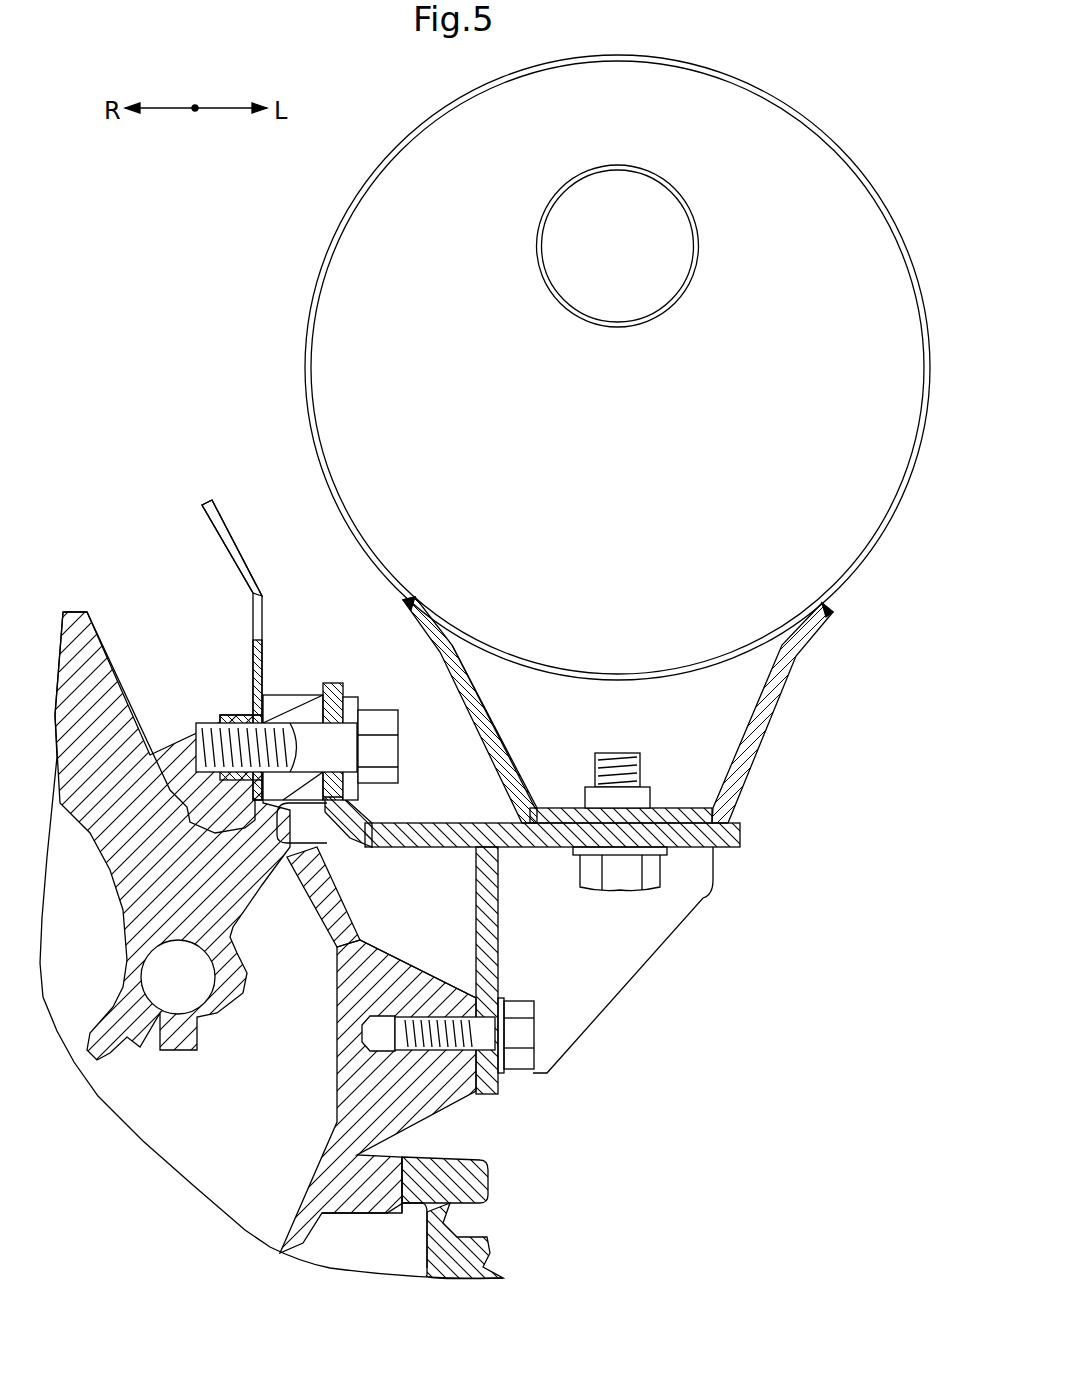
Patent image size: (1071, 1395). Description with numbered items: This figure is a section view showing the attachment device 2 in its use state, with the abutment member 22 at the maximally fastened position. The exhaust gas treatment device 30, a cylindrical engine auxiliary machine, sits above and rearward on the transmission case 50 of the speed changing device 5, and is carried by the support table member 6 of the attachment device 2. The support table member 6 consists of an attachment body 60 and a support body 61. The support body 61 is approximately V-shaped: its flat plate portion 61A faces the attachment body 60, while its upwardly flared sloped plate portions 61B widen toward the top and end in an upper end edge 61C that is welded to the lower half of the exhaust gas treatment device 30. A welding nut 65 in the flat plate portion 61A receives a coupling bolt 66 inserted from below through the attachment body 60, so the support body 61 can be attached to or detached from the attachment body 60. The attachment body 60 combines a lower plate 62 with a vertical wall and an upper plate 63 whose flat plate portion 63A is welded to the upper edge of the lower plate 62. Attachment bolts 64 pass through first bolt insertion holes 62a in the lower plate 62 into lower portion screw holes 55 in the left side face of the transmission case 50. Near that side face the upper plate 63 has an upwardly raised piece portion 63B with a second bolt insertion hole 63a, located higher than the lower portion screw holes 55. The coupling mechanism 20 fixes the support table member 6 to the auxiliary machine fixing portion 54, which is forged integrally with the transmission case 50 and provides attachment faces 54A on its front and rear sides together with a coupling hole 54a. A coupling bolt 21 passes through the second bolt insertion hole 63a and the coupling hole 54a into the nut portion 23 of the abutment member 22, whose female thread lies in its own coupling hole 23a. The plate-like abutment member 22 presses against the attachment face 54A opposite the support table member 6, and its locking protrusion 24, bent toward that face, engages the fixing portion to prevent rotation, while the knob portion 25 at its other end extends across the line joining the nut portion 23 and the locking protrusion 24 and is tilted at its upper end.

The attachment device 2 is at (367, 614).
The speed changing device 5 is at (271, 982).
The support table member 6 is at (508, 827).
The coupling mechanism 20 is at (376, 654).
The coupling bolt 21 is at (490, 738).
The abutment member 22 is at (248, 653).
The nut portion 23 is at (222, 778).
The coupling hole 23a is at (213, 733).
The locking protrusion 24 is at (378, 710).
The knob portion 25 is at (213, 527).
The exhaust gas treatment device 30 is at (760, 86).
The transmission case 50 is at (283, 1252).
The auxiliary machine fixing portion 54 is at (293, 700).
The attachment face 54A is at (253, 715).
The coupling hole 54a is at (310, 760).
The lower portion screw hole 55 is at (430, 1019).
The attachment body 60 is at (472, 835).
The support body 61 is at (648, 721).
The flat plate portion 61A is at (667, 808).
The upwardly flared sloped plate portion 61B is at (462, 702).
The upper end edge 61C is at (428, 628).
The lower plate 62 is at (500, 943).
The first bolt insertion hole 62a is at (510, 1027).
The upper plate 63 is at (526, 748).
The flat plate portion 63A is at (532, 850).
The raised piece portion 63B is at (335, 683).
The second bolt insertion hole 63a is at (337, 765).
The attachment bolt 64 is at (527, 1035).
The welding nut 65 is at (650, 783).
The coupling bolt 66 is at (627, 880).